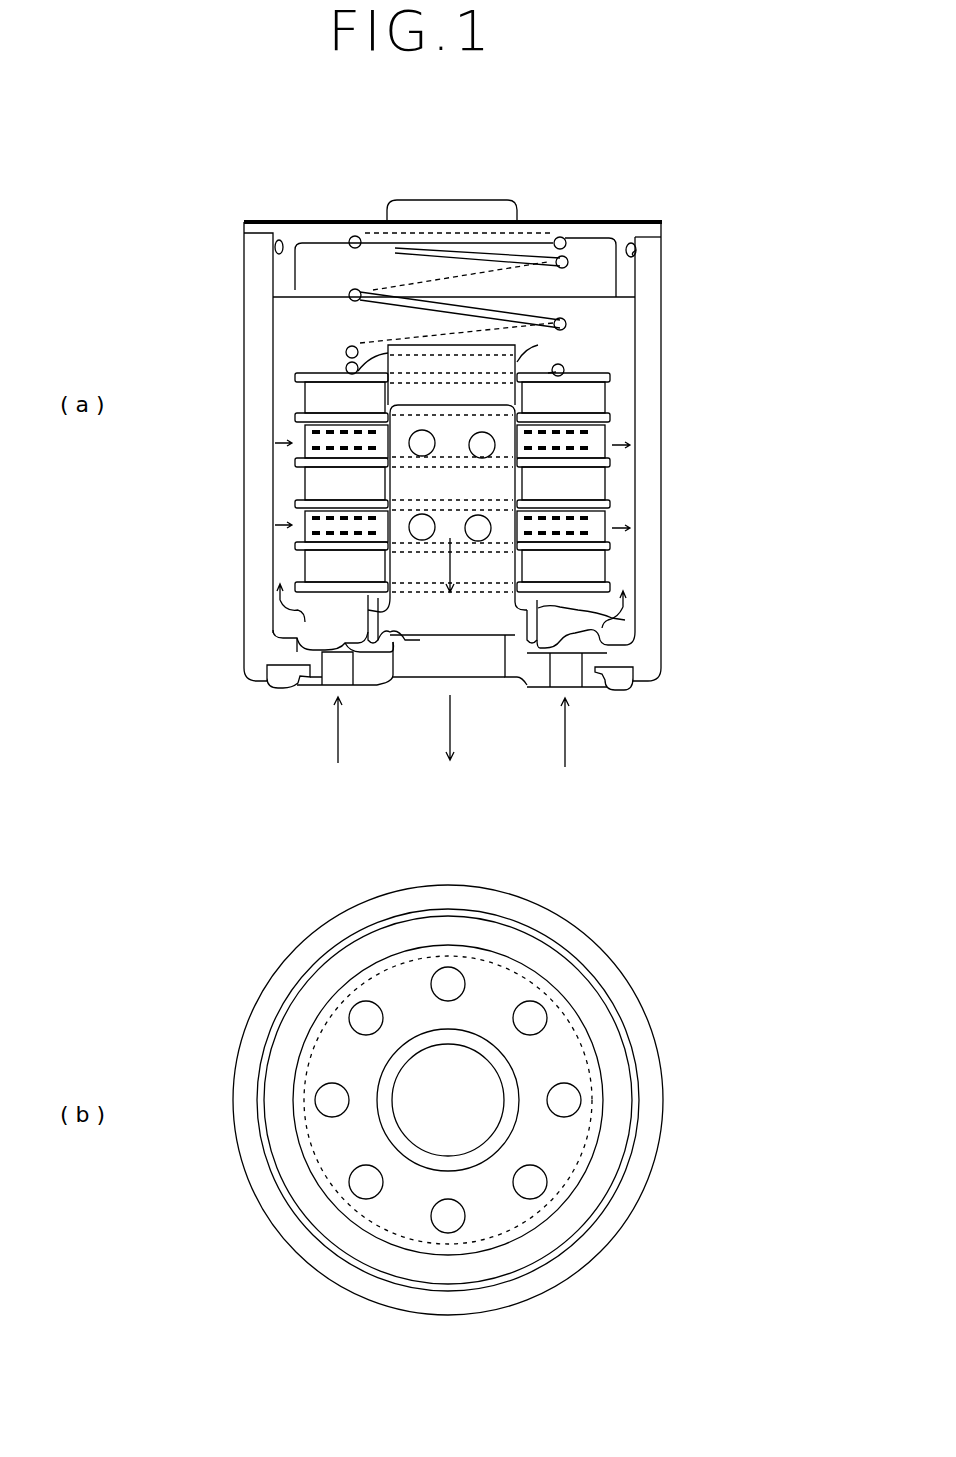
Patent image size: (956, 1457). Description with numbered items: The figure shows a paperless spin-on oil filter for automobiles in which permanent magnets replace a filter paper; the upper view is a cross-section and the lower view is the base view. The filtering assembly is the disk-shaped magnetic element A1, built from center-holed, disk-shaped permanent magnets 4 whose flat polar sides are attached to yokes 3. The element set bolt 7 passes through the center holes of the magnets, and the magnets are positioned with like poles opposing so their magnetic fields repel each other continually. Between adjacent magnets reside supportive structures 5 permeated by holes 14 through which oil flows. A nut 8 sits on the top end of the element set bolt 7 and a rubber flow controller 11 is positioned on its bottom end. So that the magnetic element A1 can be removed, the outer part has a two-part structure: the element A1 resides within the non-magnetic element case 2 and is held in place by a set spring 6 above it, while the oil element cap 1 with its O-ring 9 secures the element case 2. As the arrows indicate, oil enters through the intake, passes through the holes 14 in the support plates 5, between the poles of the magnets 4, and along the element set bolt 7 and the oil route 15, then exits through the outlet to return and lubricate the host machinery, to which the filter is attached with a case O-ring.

The oil element cap 1 is at (332, 220).
The element case 2 is at (244, 470).
The yokes 3 is at (611, 378).
The permanent magnets 4 is at (612, 398).
The supportive structures 5 is at (612, 535).
The set spring 6 is at (521, 247).
The element set bolt 7 is at (602, 628).
The nut 8 is at (538, 345).
The O-ring 9 is at (636, 252).
The rubber flow controller 11 is at (522, 660).
The holes 14 is at (618, 520).
The oil route 15 is at (492, 445).
The disk-shaped magnetic element A1 is at (318, 372).